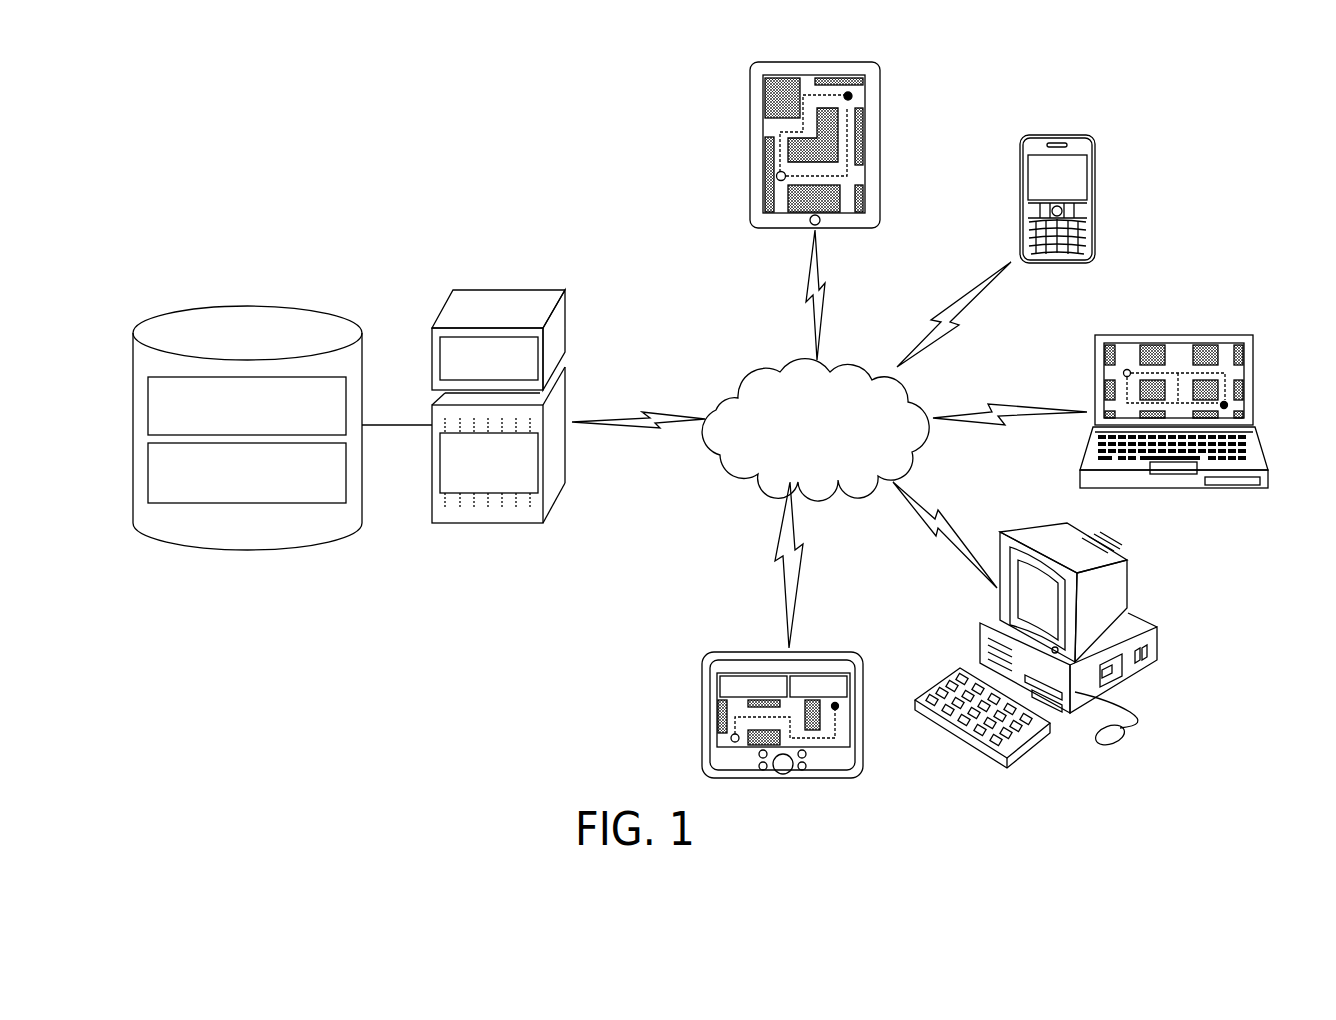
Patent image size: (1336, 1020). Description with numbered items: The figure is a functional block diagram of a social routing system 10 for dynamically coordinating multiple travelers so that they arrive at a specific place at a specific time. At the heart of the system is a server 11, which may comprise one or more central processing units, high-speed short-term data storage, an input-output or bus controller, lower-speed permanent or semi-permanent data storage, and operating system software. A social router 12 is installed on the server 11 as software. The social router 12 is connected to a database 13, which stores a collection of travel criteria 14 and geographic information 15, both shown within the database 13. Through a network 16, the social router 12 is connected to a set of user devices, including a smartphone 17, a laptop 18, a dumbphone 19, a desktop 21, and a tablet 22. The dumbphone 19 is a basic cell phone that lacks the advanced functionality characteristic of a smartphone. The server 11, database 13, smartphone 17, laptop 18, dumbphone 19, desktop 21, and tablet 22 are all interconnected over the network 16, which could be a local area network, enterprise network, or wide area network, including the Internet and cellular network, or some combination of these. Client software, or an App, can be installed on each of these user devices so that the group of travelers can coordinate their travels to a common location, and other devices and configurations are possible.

The social routing system 10 is at (528, 137).
The server 11 is at (555, 341).
The social router 12 is at (555, 465).
The database 13 is at (254, 303).
The travel criteria 14 is at (148, 408).
The geographic information 15 is at (148, 473).
The network 16 is at (755, 375).
The smartphone 17 is at (750, 110).
The laptop 18 is at (1095, 370).
The dumbphone 19 is at (1097, 172).
The desktop 21 is at (1012, 525).
The tablet 22 is at (700, 708).